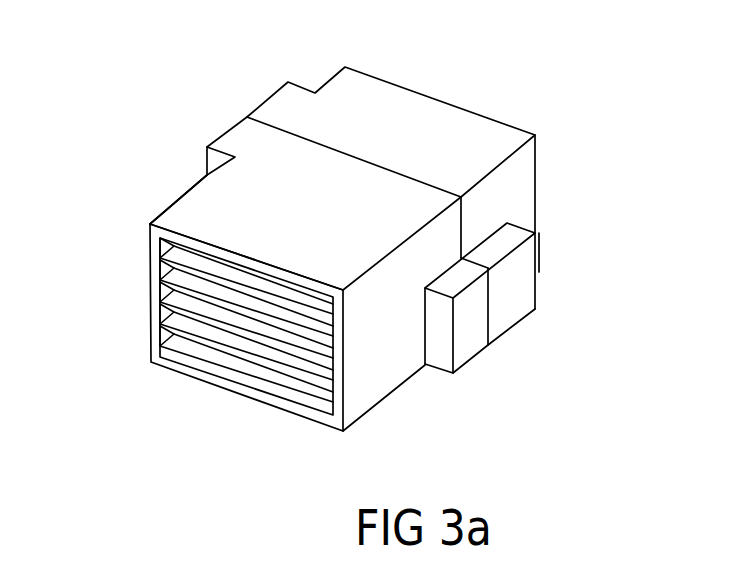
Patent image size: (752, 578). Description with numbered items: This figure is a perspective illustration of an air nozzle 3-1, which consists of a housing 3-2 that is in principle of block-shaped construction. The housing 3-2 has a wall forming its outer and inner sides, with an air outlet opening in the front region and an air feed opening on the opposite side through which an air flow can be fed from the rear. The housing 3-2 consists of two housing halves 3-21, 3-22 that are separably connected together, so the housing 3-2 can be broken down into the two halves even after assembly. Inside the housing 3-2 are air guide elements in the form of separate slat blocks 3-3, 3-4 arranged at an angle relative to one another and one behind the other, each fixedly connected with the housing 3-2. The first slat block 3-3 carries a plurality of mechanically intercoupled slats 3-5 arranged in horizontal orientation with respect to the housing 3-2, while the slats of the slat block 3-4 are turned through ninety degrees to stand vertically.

The air nozzle 3-1 is at (369, 224).
The housing 3-2 is at (502, 191).
The housing half 3-21 is at (246, 232).
The housing half 3-22 is at (354, 155).
The first slat block 3-3 is at (338, 390).
The slat block 3-4 is at (246, 357).
The slats 3-5 is at (183, 290).